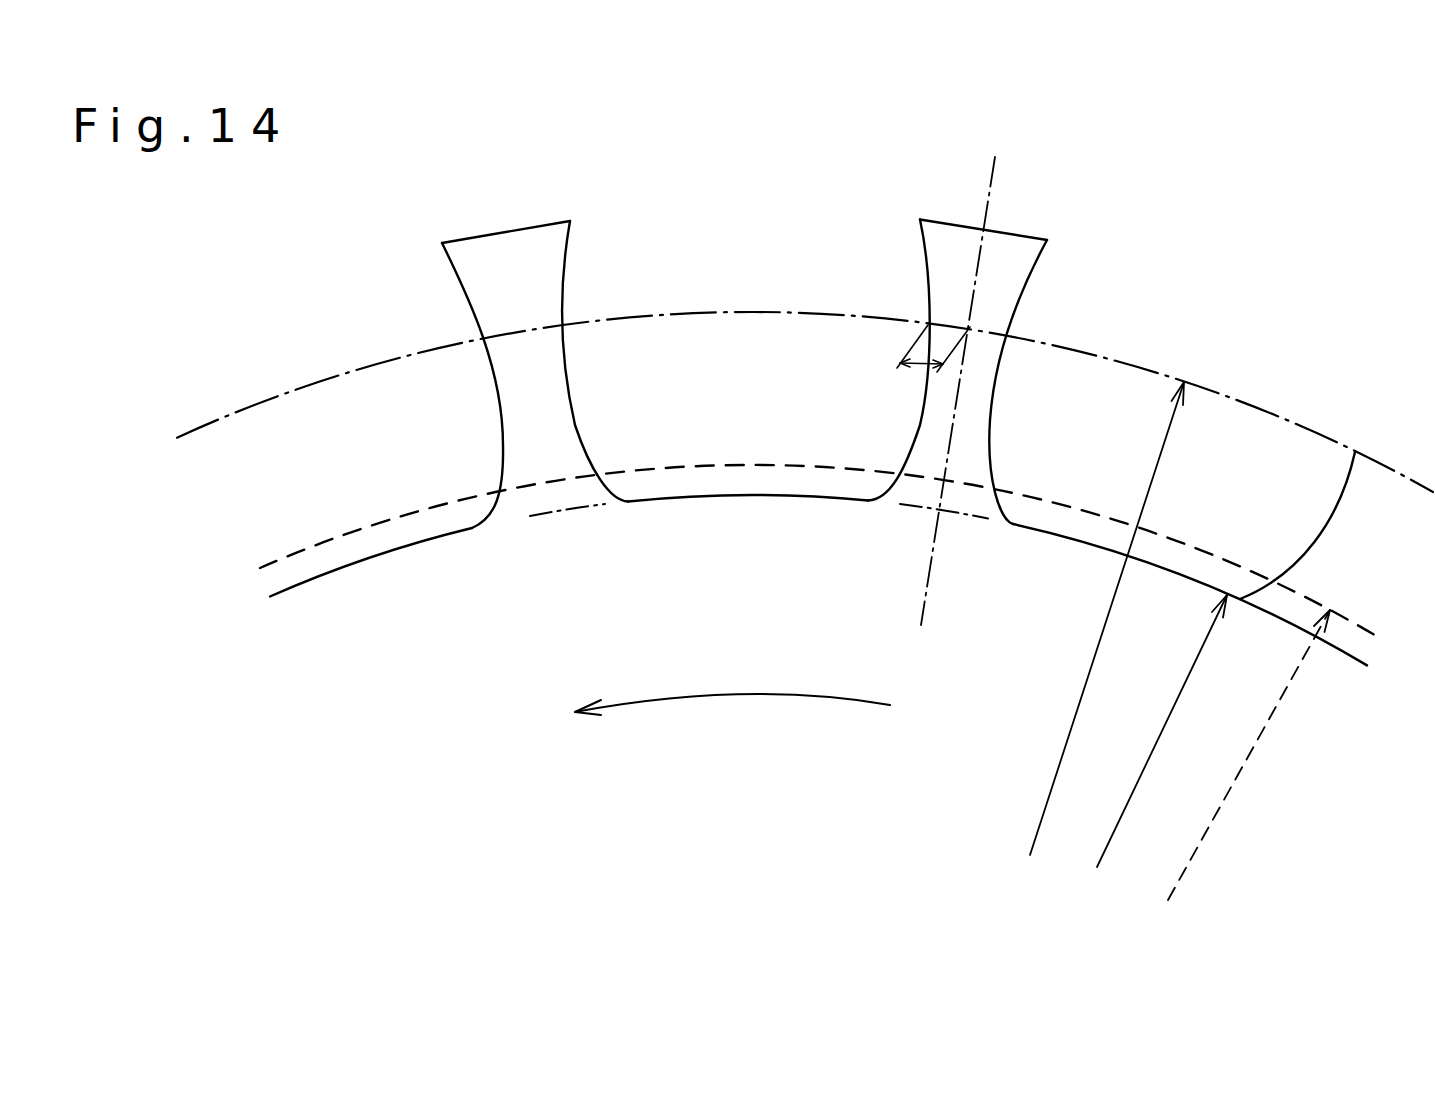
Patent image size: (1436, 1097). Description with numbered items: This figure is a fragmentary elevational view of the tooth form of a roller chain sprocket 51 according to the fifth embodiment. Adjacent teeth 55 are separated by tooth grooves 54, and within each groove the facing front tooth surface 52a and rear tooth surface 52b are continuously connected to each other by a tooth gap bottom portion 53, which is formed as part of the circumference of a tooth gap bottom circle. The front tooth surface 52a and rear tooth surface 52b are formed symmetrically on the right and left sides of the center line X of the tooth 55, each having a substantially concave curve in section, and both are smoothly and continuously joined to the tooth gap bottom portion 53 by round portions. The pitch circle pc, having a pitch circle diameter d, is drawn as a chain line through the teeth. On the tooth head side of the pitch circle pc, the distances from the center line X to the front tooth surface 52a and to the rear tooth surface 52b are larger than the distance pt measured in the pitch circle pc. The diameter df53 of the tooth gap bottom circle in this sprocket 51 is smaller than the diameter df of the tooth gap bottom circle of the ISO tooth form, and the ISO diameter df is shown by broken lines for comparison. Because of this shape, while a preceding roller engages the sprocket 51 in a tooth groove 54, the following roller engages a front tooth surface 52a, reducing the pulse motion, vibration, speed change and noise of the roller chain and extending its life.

The sprocket 51 is at (795, 631).
The front tooth surface 52a is at (460, 283).
The rear tooth surface 52b is at (563, 268).
The tooth gap bottom portion 53 is at (414, 542).
The tooth groove 54 is at (730, 352).
The tooth 55 is at (508, 231).
The pitch circle pc is at (1272, 409).
The center line of the tooth X is at (963, 375).
The distance in the pitch circle pt is at (918, 365).
The pitch circle diameter d is at (1102, 633).
The diameter of the tooth gap bottom circle df53 is at (1144, 749).
The diameter of the tooth gap bottom circle in the ISO tooth form df is at (1236, 771).